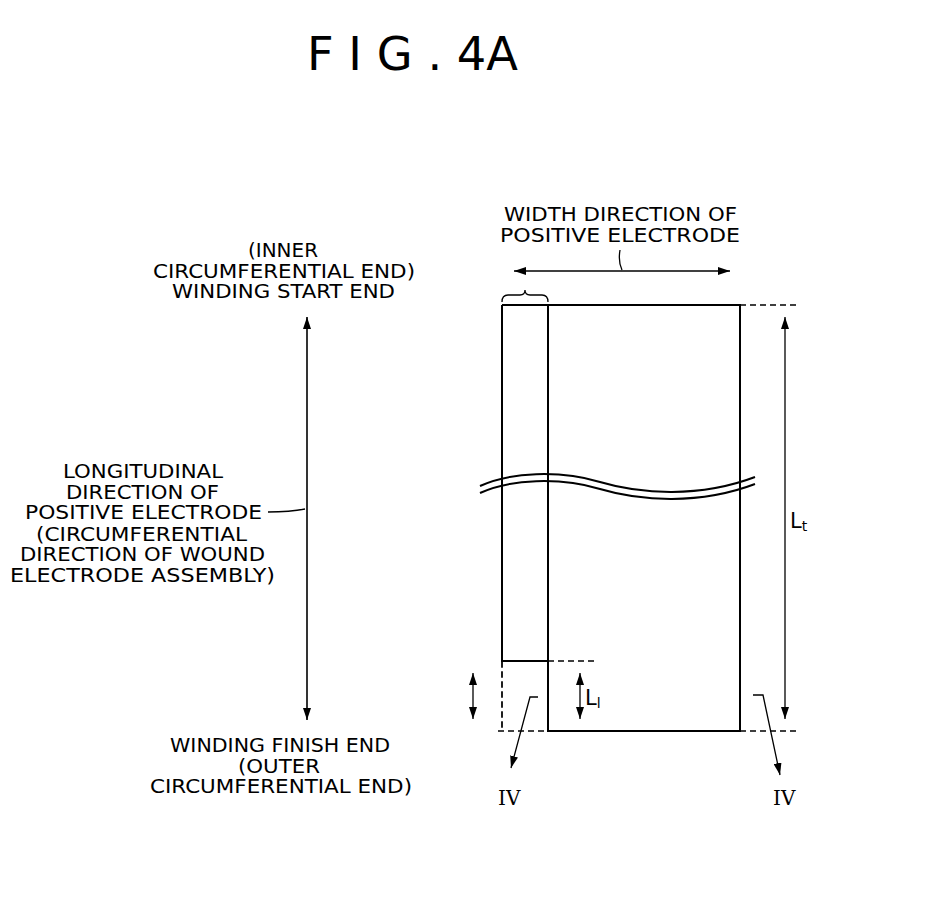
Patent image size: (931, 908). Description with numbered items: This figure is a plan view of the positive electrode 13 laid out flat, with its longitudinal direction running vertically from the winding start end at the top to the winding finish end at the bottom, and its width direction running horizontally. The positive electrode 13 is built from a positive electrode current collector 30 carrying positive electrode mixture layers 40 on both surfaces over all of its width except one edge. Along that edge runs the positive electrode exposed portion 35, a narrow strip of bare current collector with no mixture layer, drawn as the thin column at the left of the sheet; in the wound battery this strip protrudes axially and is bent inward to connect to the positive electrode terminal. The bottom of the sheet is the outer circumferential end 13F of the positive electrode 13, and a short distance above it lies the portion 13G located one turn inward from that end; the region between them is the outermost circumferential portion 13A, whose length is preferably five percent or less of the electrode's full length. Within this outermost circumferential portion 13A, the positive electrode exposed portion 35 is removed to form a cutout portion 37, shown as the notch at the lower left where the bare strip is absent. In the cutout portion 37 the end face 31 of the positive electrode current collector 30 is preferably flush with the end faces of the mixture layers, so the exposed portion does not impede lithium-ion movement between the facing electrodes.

The positive electrode 13 is at (441, 365).
The positive electrode current collector 30 is at (512, 373).
The positive electrode mixture layer 40 is at (565, 431).
The positive electrode exposed portion 35 is at (523, 290).
The outermost circumferential portion 13A is at (473, 695).
The portion located inward by one turn 13G is at (490, 661).
The outer circumferential end 13F is at (490, 731).
The cutout portion 37 is at (527, 682).
The end face of the positive electrode current collector 31 is at (548, 712).